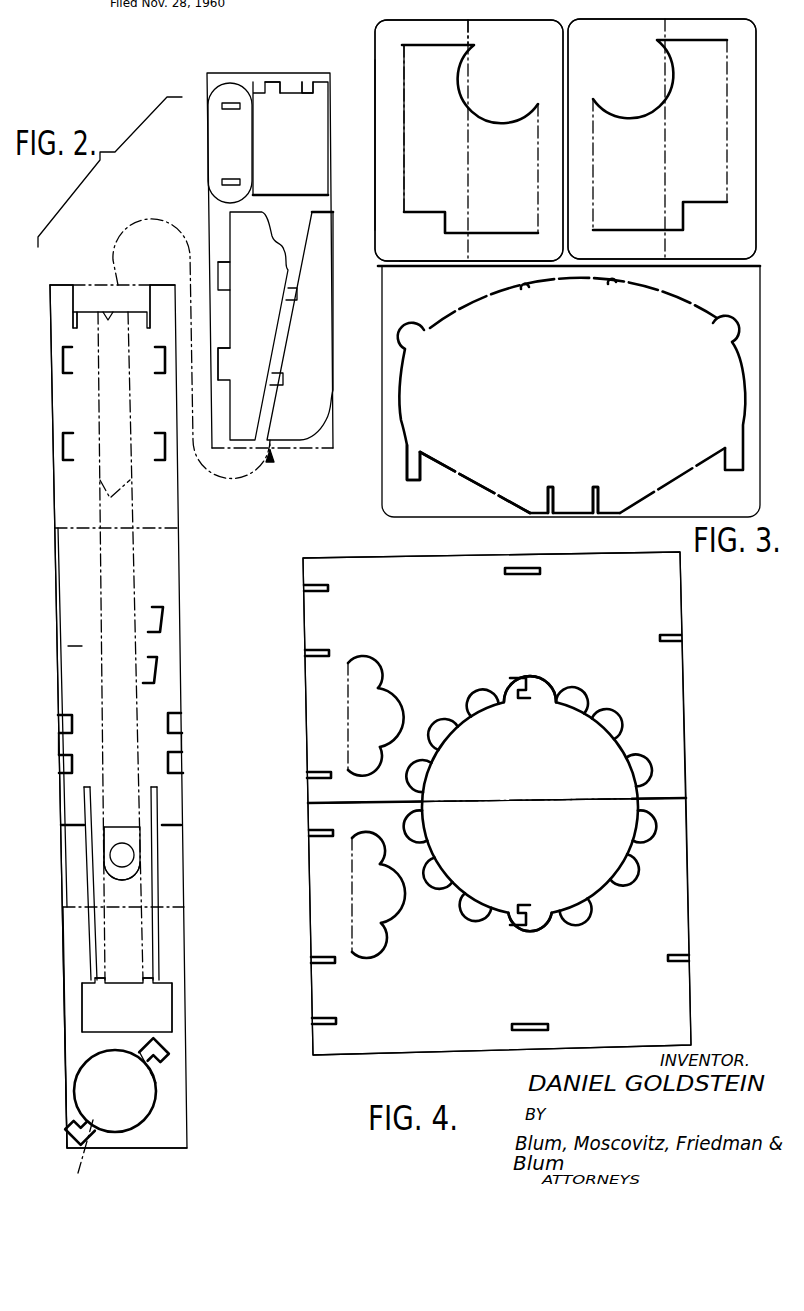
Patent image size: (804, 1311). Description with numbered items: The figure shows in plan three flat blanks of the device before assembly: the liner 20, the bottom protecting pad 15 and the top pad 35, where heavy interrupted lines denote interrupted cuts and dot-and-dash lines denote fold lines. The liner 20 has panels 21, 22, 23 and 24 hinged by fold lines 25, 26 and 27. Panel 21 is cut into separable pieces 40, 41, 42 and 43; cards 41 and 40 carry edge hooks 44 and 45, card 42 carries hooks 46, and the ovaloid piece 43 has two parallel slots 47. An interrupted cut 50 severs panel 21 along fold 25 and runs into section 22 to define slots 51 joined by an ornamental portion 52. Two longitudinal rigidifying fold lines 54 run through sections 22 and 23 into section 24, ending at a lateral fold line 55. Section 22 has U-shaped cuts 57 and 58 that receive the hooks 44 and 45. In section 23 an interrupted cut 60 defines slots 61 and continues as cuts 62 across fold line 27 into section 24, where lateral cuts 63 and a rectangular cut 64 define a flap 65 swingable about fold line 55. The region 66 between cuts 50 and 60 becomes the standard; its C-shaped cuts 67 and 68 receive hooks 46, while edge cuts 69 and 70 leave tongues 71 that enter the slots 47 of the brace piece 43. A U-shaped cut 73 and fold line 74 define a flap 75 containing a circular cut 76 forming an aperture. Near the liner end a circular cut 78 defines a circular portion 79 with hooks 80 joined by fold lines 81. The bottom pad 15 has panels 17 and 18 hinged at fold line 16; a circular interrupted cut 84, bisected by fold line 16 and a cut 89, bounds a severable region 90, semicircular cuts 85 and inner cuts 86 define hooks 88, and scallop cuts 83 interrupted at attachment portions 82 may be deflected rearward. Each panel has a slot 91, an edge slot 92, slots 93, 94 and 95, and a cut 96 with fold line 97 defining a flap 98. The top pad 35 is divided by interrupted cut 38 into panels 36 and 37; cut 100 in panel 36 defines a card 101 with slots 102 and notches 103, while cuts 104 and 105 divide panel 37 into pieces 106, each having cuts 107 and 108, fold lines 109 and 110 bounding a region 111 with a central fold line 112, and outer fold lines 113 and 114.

In FIG. 4, the bottom protecting pad 15 is at (699, 783).
In FIG. 4, the fold line 16 is at (585, 801).
In FIG. 4, the rectangular panel 17 is at (690, 905).
In FIG. 4, the rectangular panel 18 is at (680, 720).
In FIG. 2, the liner 20 is at (194, 581).
In FIG. 2, the liner panel 21 is at (322, 285).
In FIG. 2, the liner section 22 is at (60, 497).
In FIG. 2, the liner section 23 is at (68, 668).
In FIG. 2, the liner section 24 is at (182, 1095).
In FIG. 2, the fold line 25 is at (120, 283).
In FIG. 2, the fold line 26 is at (70, 530).
In FIG. 2, the fold line 27 is at (172, 907).
In FIG. 3, the top pad 35 is at (376, 504).
In FIG. 3, the top pad panel 36 is at (385, 362).
In FIG. 3, the top pad panel 37 is at (378, 140).
In FIG. 3, the interrupted cut 38 is at (450, 268).
In FIG. 2, the ornamental card piece 40 is at (304, 356).
In FIG. 2, the ornamental card piece 41 is at (247, 251).
In FIG. 2, the ornamental card piece 42 is at (305, 120).
In FIG. 2, the separable ovaloid piece 43 is at (215, 115).
In FIG. 2, the hooks or tabs 44 is at (285, 295).
In FIG. 2, the hooks or tabs 45 is at (225, 262).
In FIG. 2, the edge hooks or tabs 46 is at (306, 82).
In FIG. 2, the slots 47 is at (231, 103).
In FIG. 2, the interrupted cut 50 is at (68, 285).
In FIG. 2, the slots 51 is at (73, 326).
In FIG. 2, the ornamental configuration 52 is at (107, 320).
In FIG. 2, the longitudinal fold lines 54 is at (106, 490).
In FIG. 2, the lateral fold line 55 is at (132, 984).
In FIG. 2, the U-shaped cut 57 is at (62, 360).
In FIG. 2, the U-shaped cut 58 is at (62, 446).
In FIG. 2, the interrupted cut 60 is at (70, 826).
In FIG. 2, the slots 61 is at (155, 800).
In FIG. 2, the longitudinal cuts 62 is at (87, 940).
In FIG. 2, the lateral cuts 63 is at (147, 978).
In FIG. 2, the rectangular cut 64 is at (172, 1000).
In FIG. 2, the lower end flap 65 is at (92, 1008).
In FIG. 2, the standard region 66 is at (74, 638).
In FIG. 2, the C-shaped cut 67 is at (163, 618).
In FIG. 2, the C-shaped cut 68 is at (157, 668).
In FIG. 2, the C-shaped edge cut 69 is at (60, 715).
In FIG. 2, the C-shaped edge cut 70 is at (63, 776).
In FIG. 2, the tab or tongue 71 is at (58, 745).
In FIG. 2, the U-shaped cut 73 is at (105, 846).
In FIG. 2, the lateral fold line 74 is at (118, 828).
In FIG. 2, the flap 75 is at (103, 885).
In FIG. 2, the circular cut 76 is at (110, 870).
In FIG. 2, the circular cut 78 is at (150, 1110).
In FIG. 2, the circular portion 79 is at (90, 1083).
In FIG. 2, the hooks or tabs 80 is at (166, 1055).
In FIG. 2, the fold lines 81 is at (156, 1075).
In FIG. 4, the attachment portion 82 is at (413, 775).
In FIG. 4, the scallop cuts 83 is at (460, 710).
In FIG. 4, the circular interrupted cut 84 is at (484, 895).
In FIG. 4, the semi-circular cut 85 is at (550, 680).
In FIG. 4, the additional cut 86 is at (524, 688).
In FIG. 4, the hook or tab 88 is at (517, 704).
In FIG. 4, the cut 89 is at (392, 806).
In FIG. 4, the circular region 90 is at (572, 740).
In FIG. 4, the slot 91 is at (522, 575).
In FIG. 4, the slot 92 is at (682, 638).
In FIG. 4, the slot 93 is at (308, 775).
In FIG. 4, the slot 94 is at (305, 653).
In FIG. 4, the slot 95 is at (305, 588).
In FIG. 4, the cut 96 is at (370, 674).
In FIG. 4, the fold line 97 is at (346, 710).
In FIG. 4, the flap 98 is at (385, 700).
In FIG. 3, the interrupted cut 100 is at (485, 490).
In FIG. 3, the card 101 is at (401, 460).
In FIG. 3, the slots 102 is at (556, 493).
In FIG. 3, the notches or slots 103 is at (612, 285).
In FIG. 3, the cut 104 is at (570, 52).
In FIG. 3, the cut 105 is at (505, 263).
In FIG. 3, the sheets or pieces 106 is at (393, 23).
In FIG. 3, the lower cut 107 is at (490, 233).
In FIG. 3, the upper cut 108 is at (505, 118).
In FIG. 3, the fold line 109 is at (406, 148).
In FIG. 3, the fold line 110 is at (540, 170).
In FIG. 3, the region 111 is at (422, 175).
In FIG. 3, the fold line 112 is at (468, 170).
In FIG. 3, the fold line 113 is at (470, 245).
In FIG. 3, the fold line 114 is at (470, 45).